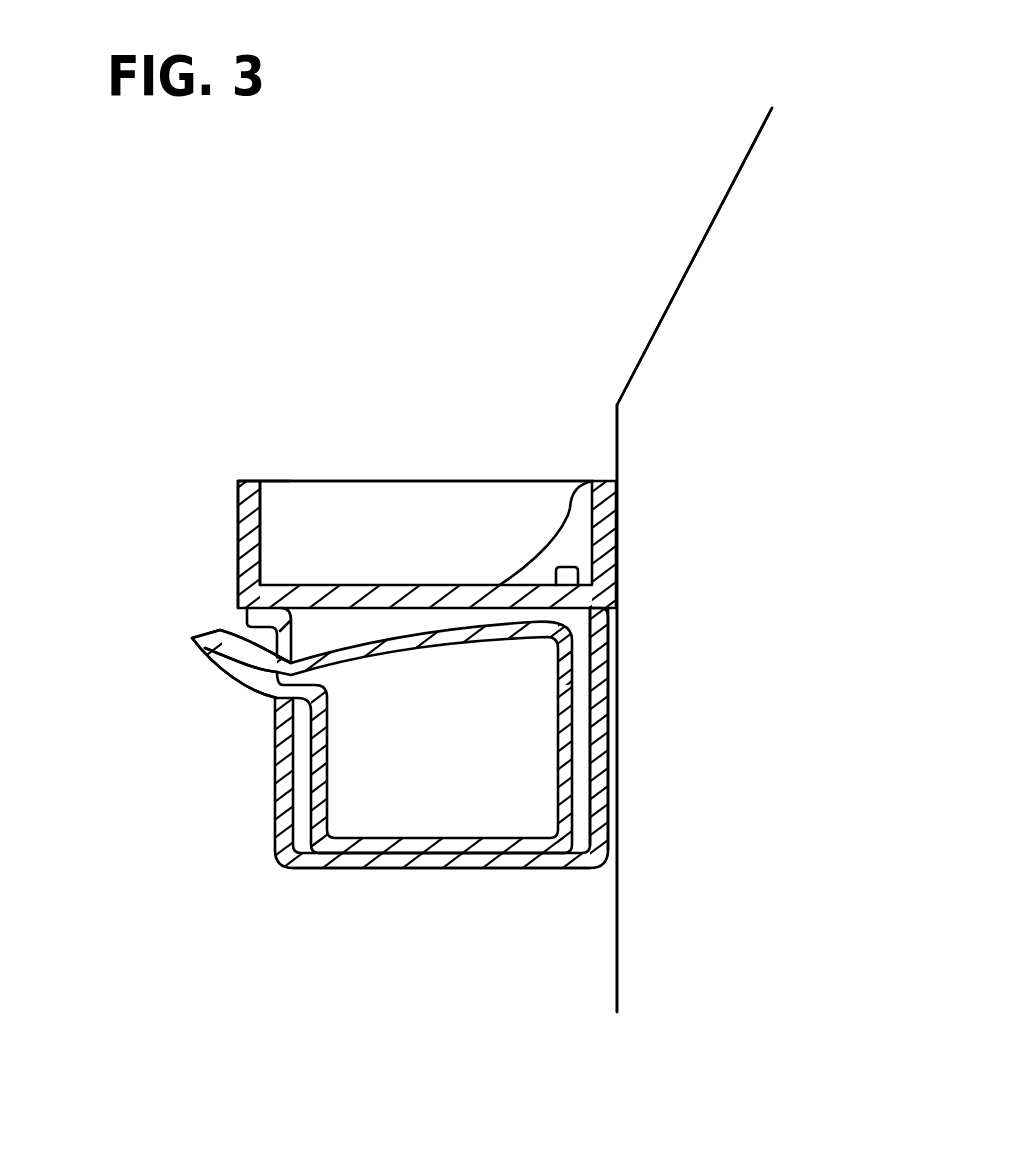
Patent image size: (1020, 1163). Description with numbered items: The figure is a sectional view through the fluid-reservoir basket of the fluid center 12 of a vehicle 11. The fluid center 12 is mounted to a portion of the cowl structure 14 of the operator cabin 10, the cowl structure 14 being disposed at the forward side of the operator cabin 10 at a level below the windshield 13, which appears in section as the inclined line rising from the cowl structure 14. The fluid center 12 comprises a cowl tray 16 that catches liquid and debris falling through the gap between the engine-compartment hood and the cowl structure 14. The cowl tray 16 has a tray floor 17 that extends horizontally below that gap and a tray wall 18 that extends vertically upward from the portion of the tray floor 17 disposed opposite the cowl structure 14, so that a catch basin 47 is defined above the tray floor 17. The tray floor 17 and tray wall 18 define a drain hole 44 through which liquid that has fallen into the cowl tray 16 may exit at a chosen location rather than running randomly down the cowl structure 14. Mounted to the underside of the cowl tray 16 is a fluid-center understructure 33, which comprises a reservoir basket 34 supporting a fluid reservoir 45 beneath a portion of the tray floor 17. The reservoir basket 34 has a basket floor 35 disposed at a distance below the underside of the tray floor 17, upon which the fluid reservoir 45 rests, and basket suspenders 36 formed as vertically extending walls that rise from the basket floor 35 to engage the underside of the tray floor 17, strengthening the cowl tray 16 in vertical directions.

The operator cabin 10 is at (740, 167).
The vehicle 11 is at (594, 267).
The windshield 13 is at (705, 237).
The cowl structure 14 is at (617, 434).
The fluid center 12 is at (237, 535).
The cowl tray 16 is at (290, 481).
The tray floor 17 is at (600, 481).
The tray wall 18 is at (247, 571).
The drain hole 44 is at (578, 576).
The catch basin 47 is at (450, 500).
The fluid-center understructure 33 is at (285, 822).
The reservoir basket 34 is at (453, 857).
The basket floor 35 is at (347, 867).
The basket suspender 36 is at (275, 750).
The fluid reservoir 45 is at (572, 778).